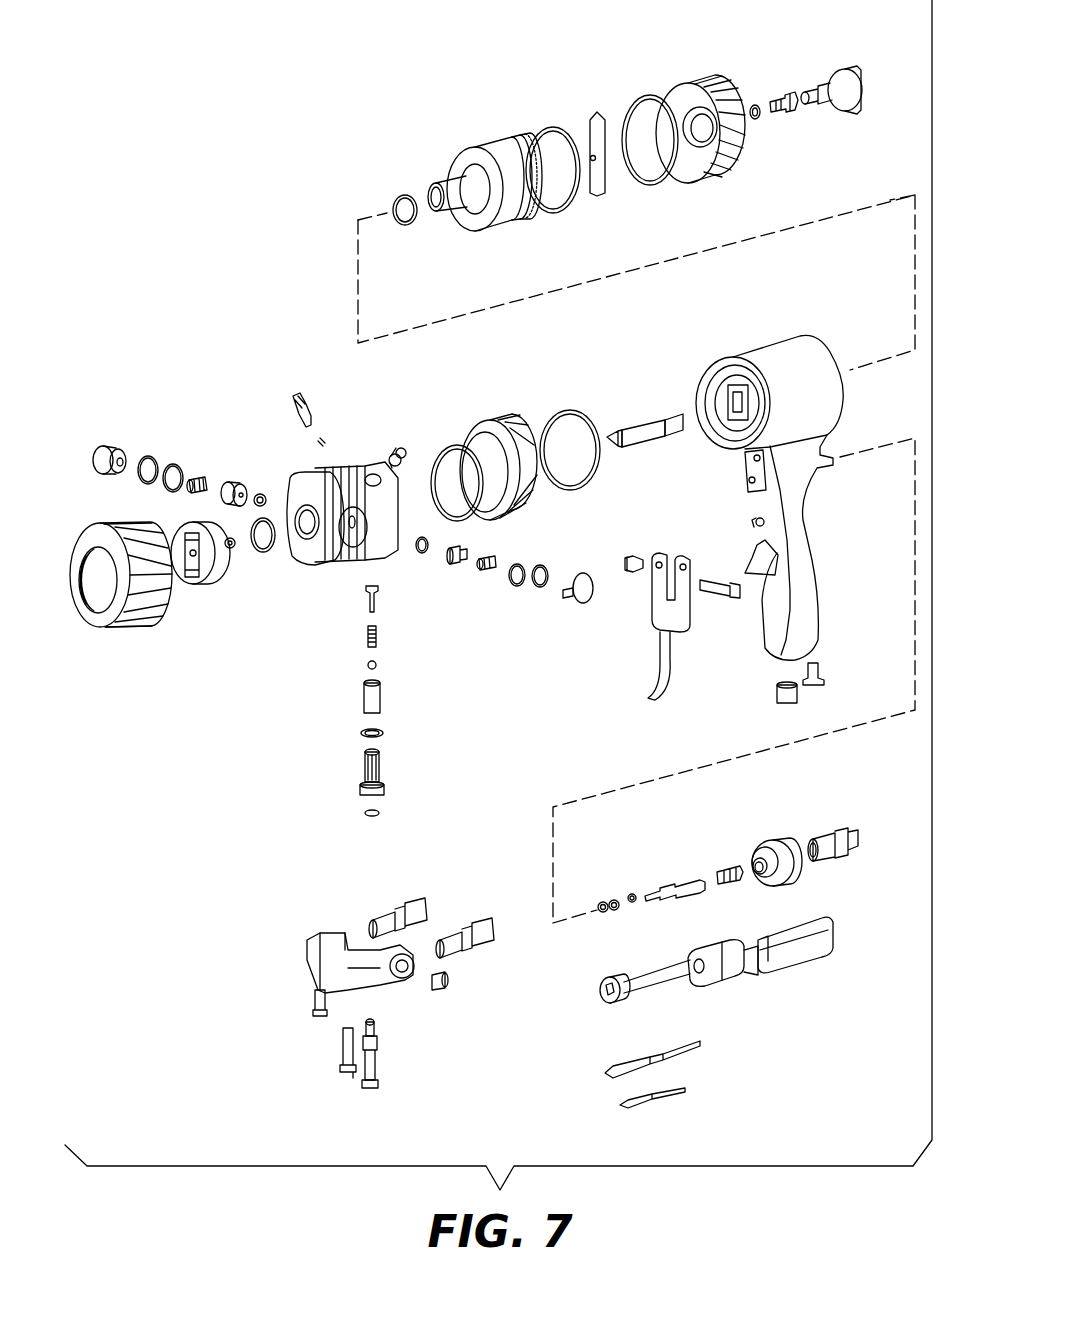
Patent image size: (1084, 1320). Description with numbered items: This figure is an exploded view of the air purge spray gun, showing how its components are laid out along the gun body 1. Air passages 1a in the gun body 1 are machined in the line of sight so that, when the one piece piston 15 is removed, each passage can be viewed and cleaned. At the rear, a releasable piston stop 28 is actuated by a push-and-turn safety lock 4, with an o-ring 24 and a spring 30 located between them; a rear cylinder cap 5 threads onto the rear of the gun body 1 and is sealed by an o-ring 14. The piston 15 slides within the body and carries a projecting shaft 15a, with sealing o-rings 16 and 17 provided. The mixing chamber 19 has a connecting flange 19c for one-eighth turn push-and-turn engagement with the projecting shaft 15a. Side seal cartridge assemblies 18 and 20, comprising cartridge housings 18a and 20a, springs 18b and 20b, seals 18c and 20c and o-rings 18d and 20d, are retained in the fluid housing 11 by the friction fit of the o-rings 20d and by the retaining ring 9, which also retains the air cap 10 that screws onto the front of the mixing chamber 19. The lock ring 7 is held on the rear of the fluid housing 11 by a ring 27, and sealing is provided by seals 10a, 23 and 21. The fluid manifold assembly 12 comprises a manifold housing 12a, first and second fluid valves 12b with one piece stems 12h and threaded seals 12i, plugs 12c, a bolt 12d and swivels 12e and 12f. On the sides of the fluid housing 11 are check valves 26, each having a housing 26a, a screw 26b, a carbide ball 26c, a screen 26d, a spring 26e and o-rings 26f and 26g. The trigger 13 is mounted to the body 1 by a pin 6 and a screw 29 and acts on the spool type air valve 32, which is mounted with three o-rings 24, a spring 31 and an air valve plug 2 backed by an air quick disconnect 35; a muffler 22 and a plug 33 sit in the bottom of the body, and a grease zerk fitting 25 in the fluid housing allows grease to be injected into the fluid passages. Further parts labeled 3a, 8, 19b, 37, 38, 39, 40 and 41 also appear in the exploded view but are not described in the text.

The gun body 1 is at (800, 466).
The air passages 1a is at (845, 385).
The air valve plug 2 is at (780, 840).
The fluid nozzle tip 3a is at (385, 477).
The safety lock 4 is at (843, 68).
The rear cylinder cap 5 is at (700, 80).
The pin 6 is at (710, 592).
The lock ring 7 is at (493, 420).
The set screw 8 is at (297, 395).
The retaining ring 9 is at (112, 620).
The air cap 10 is at (192, 582).
The seal 10a is at (230, 549).
The fluid housing 11 is at (352, 465).
The fluid manifold assembly 12 is at (354, 980).
The manifold housing 12a is at (318, 968).
The fluid valve 12b is at (378, 1062).
The plug 12c is at (450, 982).
The bolt 12d is at (340, 1068).
The swivel 12e is at (412, 905).
The swivel 12f is at (480, 925).
The one piece stem 12h is at (380, 1085).
The seal 12i is at (378, 1030).
The trigger 13 is at (680, 662).
The o-ring 14 is at (643, 102).
The one piece piston 15 is at (485, 148).
The projecting shaft 15a is at (457, 183).
The sealing o-ring 16 is at (547, 127).
The sealing o-ring 17 is at (405, 196).
The side seal cartridge assembly 18 is at (494, 638).
The cartridge housing 18a is at (422, 553).
The spring 18b is at (487, 573).
The seal 18c is at (455, 564).
The o-ring 18d is at (540, 587).
The mixing chamber 19 is at (651, 408).
The needle shaft 19b is at (662, 443).
The connecting flange 19c is at (630, 420).
The side seal cartridge assembly 20 is at (189, 412).
The cartridge housing 20a is at (104, 445).
The spring 20b is at (198, 472).
The seal 20c is at (232, 480).
The o-ring 20d is at (173, 463).
The seal 21 is at (445, 445).
The muffler 22 is at (825, 672).
The seal 23 is at (268, 552).
The o-ring 24 is at (753, 105).
The grease zerk fitting 25 is at (398, 446).
The check valve 26 is at (325, 716).
The housing 26a is at (358, 780).
The screw 26b is at (365, 595).
The carbide ball 26c is at (366, 666).
The screen 26d is at (362, 703).
The spring 26e is at (366, 632).
The o-ring 26f is at (364, 815).
The o-ring 26g is at (360, 737).
The ring 27 is at (568, 410).
The releasable piston stop 28 is at (597, 112).
The screw 29 is at (632, 572).
The spring 30 is at (787, 94).
The spring 31 is at (732, 866).
The spool type air valve 32 is at (685, 880).
The plug 33 is at (800, 696).
The air quick disconnect 35 is at (822, 836).
The fluid tube assembly 37 is at (833, 944).
The needle 38 is at (700, 1043).
The needle 39 is at (687, 1090).
The needle tip 40 is at (615, 1106).
The needle tip 41 is at (598, 1070).